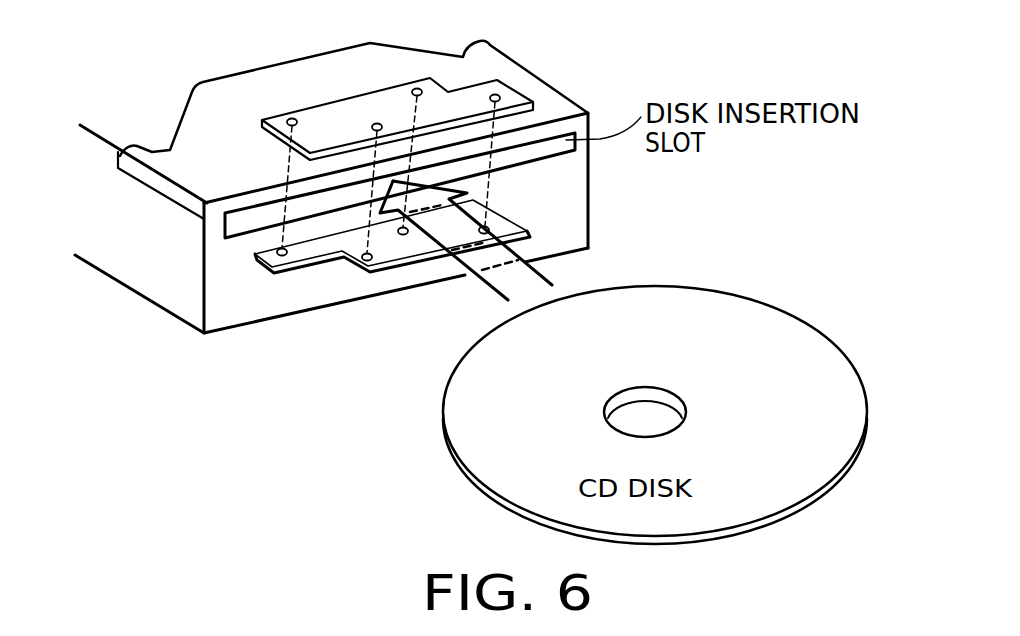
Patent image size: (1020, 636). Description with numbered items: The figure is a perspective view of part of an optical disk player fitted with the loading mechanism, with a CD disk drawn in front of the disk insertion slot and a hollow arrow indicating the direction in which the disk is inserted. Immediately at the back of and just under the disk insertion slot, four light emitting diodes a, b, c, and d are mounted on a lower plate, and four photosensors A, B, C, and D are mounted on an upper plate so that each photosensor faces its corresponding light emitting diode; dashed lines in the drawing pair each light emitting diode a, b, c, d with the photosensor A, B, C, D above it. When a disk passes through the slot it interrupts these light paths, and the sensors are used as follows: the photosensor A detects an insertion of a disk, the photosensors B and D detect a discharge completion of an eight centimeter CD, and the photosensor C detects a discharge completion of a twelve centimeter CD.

The photosensor A is at (366, 122).
The photosensor B is at (407, 100).
The photosensor C is at (486, 97).
The photosensor D is at (303, 124).
The light emitting diode a is at (375, 251).
The light emitting diode b is at (411, 243).
The light emitting diode c is at (493, 231).
The light emitting diode d is at (291, 253).